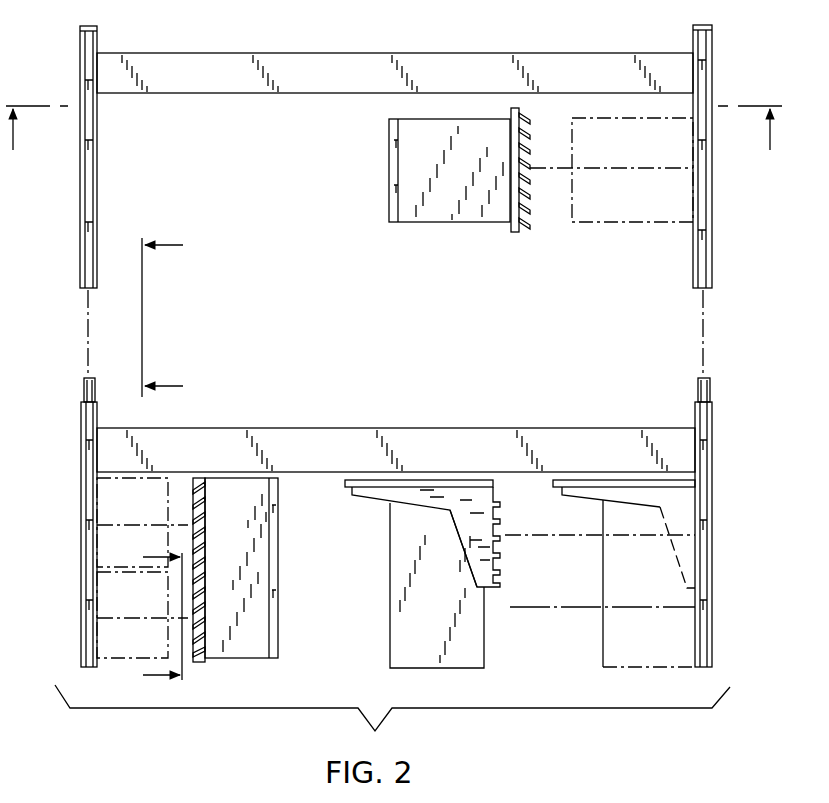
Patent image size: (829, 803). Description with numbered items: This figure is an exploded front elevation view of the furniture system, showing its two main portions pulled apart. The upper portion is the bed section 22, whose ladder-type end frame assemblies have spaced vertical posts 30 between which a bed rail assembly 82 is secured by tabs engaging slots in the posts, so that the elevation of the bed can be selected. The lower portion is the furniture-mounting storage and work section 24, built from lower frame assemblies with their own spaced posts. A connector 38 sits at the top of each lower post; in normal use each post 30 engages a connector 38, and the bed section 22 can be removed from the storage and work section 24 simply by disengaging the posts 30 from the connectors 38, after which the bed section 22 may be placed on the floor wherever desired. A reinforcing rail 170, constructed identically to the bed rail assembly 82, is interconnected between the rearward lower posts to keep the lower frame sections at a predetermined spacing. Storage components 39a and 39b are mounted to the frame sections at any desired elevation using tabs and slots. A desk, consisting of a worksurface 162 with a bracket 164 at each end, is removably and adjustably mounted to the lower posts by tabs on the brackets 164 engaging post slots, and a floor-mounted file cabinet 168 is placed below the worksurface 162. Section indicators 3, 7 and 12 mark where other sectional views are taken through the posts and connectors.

The section line 3- 3 is at (152, 317).
The section line 7- 7 is at (394, 118).
The section line 12- 12 is at (149, 616).
The bed section 22 is at (762, 216).
The furniture-mounting storage and work section 24 is at (760, 518).
The vertical post 30 is at (80, 167).
The connector 38 is at (82, 398).
The storage component 39a is at (282, 636).
The storage component 39b is at (388, 205).
The bed rail assembly 82 is at (378, 51).
The worksurface 162 is at (347, 484).
The bracket 164 is at (449, 513).
The file cabinet 168 is at (388, 600).
The reinforcing rail 170 is at (374, 425).